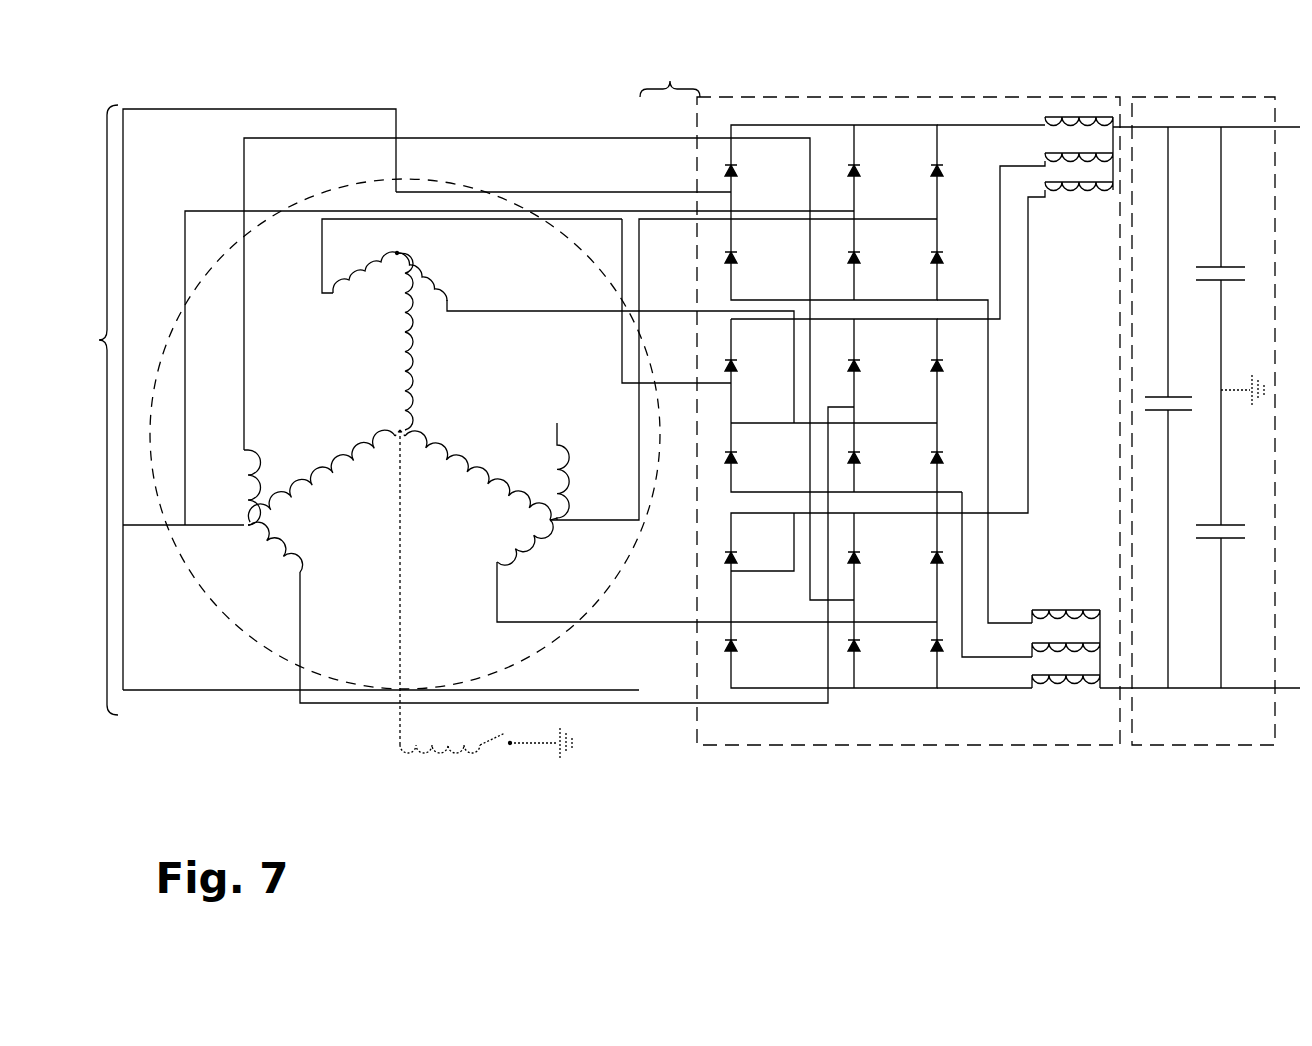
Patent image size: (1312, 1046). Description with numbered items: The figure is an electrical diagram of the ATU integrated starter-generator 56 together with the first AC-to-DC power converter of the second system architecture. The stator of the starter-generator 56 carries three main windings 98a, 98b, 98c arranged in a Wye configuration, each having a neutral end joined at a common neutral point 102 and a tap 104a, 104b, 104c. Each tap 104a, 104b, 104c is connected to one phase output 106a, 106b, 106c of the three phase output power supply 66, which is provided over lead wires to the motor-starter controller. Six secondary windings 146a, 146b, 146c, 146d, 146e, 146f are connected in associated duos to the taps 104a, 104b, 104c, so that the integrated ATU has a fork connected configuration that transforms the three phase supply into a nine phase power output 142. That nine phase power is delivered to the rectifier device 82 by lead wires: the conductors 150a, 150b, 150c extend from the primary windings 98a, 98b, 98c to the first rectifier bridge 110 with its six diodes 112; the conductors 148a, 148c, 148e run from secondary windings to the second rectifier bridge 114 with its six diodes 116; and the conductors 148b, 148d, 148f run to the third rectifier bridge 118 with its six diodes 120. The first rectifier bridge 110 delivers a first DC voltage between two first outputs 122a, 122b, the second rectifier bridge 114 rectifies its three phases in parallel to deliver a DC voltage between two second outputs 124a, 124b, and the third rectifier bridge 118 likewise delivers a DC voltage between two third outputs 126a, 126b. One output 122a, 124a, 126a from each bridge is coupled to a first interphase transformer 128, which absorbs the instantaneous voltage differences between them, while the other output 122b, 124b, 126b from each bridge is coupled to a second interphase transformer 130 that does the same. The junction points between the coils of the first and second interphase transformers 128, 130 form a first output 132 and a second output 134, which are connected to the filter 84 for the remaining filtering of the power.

The ATU integrated starter-generator 56 is at (178, 322).
The three phase output power supply 66 is at (93, 410).
The rectifier device 82 is at (770, 97).
The filter 84 is at (1228, 92).
The main winding 98a is at (410, 338).
The main winding 98b is at (452, 495).
The main winding 98c is at (340, 446).
The common neutral point 102 is at (408, 428).
The tap 104a is at (396, 256).
The tap 104b is at (553, 528).
The tap 104c is at (248, 532).
The phase output 106a is at (165, 108).
The phase output 106b is at (143, 527).
The phase output 106c is at (148, 691).
The first rectifier bridge 110 is at (810, 125).
The diode 112 is at (740, 172).
The second rectifier bridge 114 is at (900, 320).
The diode 116 is at (738, 368).
The third rectifier bridge 118 is at (870, 690).
The diode 120 is at (738, 557).
The first output 122a is at (975, 125).
The first output 122b is at (1010, 640).
The second output 124a is at (1000, 160).
The second output 124b is at (990, 700).
The third output 126a is at (1028, 190).
The third output 126b is at (963, 700).
The first interphase transformer 128 is at (1090, 118).
The second interphase transformer 130 is at (1075, 690).
The first output 132 is at (1123, 122).
The second output 134 is at (1127, 700).
The nine phase power output 142 is at (670, 79).
The secondary winding 146a is at (357, 290).
The secondary winding 146b is at (432, 270).
The secondary winding 146c is at (555, 470).
The secondary winding 146d is at (505, 540).
The secondary winding 146e is at (290, 548).
The secondary winding 146f is at (245, 470).
The conductor 148a is at (560, 218).
The conductor 148b is at (528, 312).
The conductor 148c is at (597, 423).
The conductor 148d is at (590, 624).
The conductor 148e is at (605, 704).
The conductor 148f is at (440, 137).
The conductor 150a is at (620, 192).
The conductor 150b is at (608, 518).
The conductor 150c is at (185, 213).